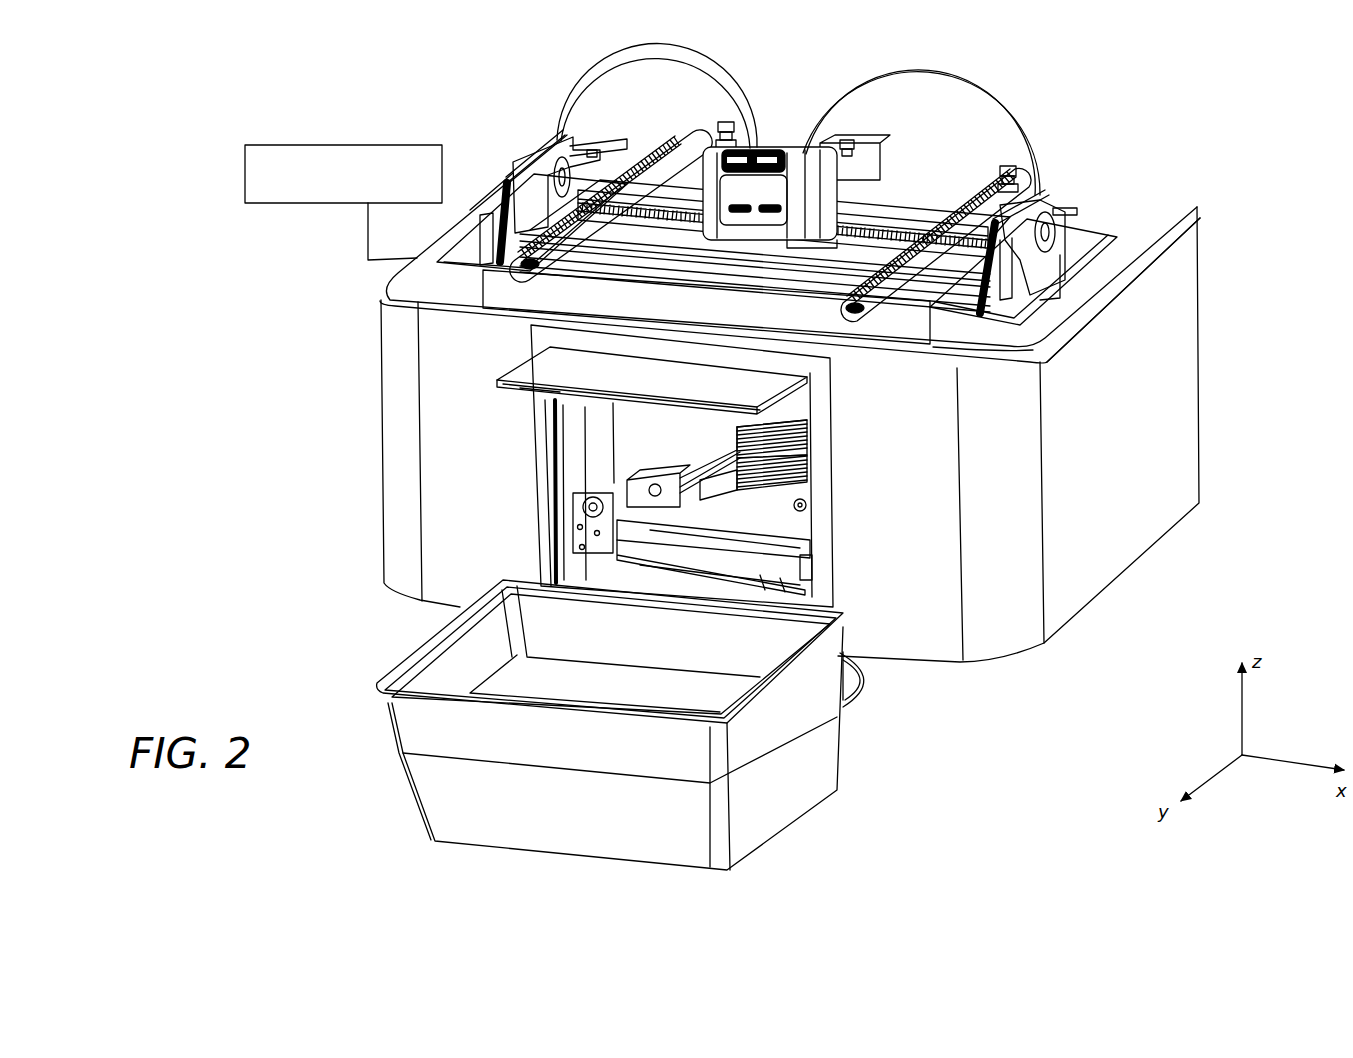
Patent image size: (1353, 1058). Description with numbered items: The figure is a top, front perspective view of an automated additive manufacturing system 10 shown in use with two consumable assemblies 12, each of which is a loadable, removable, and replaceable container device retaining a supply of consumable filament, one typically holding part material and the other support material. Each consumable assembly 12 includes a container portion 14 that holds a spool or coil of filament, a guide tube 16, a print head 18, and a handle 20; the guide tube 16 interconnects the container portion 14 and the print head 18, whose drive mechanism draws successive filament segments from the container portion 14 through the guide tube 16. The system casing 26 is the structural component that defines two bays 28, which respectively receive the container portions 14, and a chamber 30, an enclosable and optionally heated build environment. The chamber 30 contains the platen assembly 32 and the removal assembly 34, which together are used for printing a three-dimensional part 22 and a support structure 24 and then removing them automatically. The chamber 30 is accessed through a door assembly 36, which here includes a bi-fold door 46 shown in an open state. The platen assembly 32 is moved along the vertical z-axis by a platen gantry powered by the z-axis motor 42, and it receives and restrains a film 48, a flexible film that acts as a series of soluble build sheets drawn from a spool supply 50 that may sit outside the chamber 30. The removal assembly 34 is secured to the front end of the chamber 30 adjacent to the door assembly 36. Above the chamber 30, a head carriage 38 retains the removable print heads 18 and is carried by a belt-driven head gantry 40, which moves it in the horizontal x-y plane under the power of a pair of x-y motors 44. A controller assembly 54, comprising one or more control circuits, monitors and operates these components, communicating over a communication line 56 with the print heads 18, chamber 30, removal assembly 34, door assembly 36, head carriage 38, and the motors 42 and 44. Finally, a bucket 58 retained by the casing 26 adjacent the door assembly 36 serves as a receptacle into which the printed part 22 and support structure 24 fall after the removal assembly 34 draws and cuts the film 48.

The system 10 is at (415, 72).
The consumable assembly 12 is at (543, 88).
The container portion 14 is at (483, 258).
The guide tube 16 is at (668, 56).
The print head 18 is at (802, 138).
The handle 20 is at (540, 146).
The 3D part 22 is at (800, 442).
The support structure 24 is at (800, 483).
The system casing 26 is at (383, 488).
The bays 28 is at (462, 238).
The chamber 30 is at (563, 480).
The platen assembly 32 is at (826, 505).
The removal assembly 34 is at (826, 566).
The door assembly 36 is at (490, 383).
The head carriage 38 is at (742, 240).
The head gantry 40 is at (893, 208).
The z-axis motor 42 is at (860, 152).
The x-y motors 44 is at (722, 138).
The bi-fold door 46 is at (518, 388).
The film 48 is at (713, 493).
The spool supply 50 is at (856, 700).
The controller assembly 54 is at (335, 145).
The communication line 56 is at (368, 232).
The bucket 58 is at (790, 790).